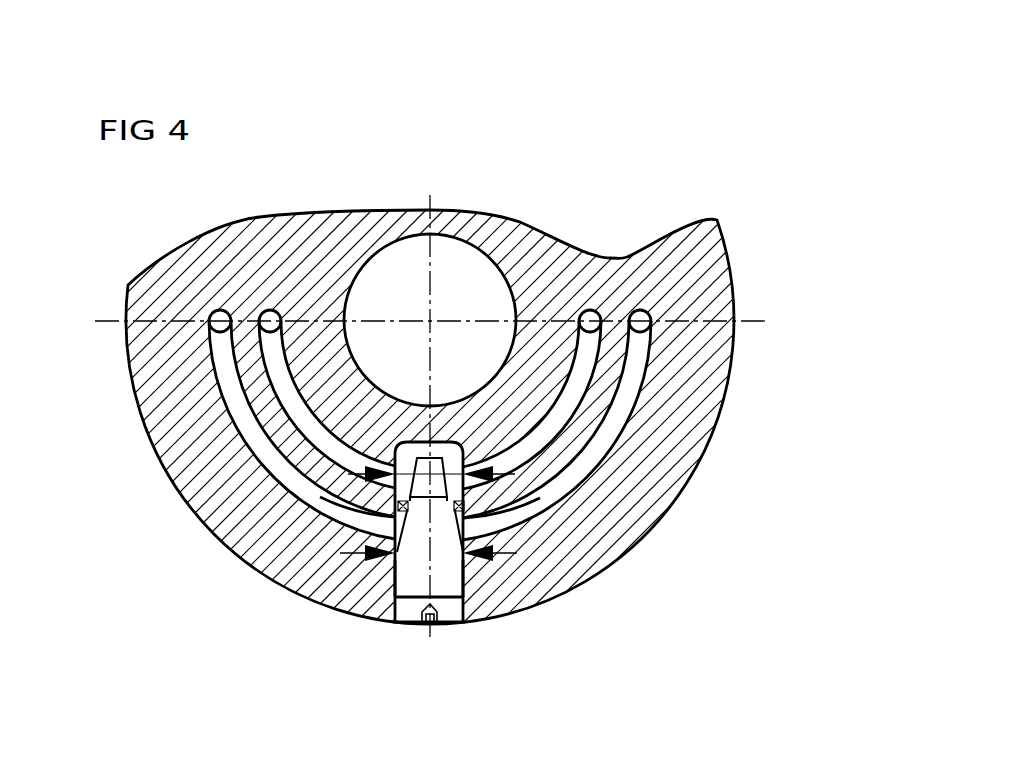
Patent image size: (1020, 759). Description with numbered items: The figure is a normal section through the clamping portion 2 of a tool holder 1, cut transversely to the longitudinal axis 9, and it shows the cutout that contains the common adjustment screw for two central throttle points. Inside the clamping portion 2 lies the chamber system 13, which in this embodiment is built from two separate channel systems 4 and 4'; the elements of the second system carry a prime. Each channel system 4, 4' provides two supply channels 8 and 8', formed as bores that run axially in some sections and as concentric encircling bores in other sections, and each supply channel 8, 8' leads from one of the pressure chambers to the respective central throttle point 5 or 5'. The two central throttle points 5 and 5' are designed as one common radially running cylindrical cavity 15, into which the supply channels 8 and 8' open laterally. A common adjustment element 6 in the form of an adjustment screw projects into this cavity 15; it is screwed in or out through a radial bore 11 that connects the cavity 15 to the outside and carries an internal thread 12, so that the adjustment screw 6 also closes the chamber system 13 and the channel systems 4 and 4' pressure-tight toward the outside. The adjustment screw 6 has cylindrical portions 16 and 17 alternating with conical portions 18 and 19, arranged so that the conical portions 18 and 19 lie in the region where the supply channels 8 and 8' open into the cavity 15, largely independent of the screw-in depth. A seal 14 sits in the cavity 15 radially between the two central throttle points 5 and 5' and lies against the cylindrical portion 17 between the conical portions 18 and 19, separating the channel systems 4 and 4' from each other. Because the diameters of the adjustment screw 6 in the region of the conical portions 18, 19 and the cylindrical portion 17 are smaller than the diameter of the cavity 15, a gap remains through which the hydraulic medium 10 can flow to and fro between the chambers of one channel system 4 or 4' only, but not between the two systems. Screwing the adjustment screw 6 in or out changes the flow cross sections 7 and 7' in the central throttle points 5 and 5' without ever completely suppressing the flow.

The tool holder 1 is at (780, 140).
The clamping portion 2 is at (663, 247).
The channel system 4 is at (448, 321).
The second channel system 4' is at (430, 425).
The central throttle point 5 is at (462, 438).
The central throttle point 5' is at (360, 600).
The adjustment element 6 is at (428, 626).
The flow cross section 7 is at (570, 487).
The flow cross section 7' is at (431, 604).
The supply channel 8 is at (450, 321).
The supply channel 8' is at (430, 425).
The longitudinal axis 9 is at (431, 320).
The hydraulic medium 10 is at (235, 396).
The radial bore 11 is at (394, 655).
The internal thread 12 is at (362, 623).
The chamber system 13 is at (632, 378).
The seal 14 is at (505, 528).
The cavity 15 is at (393, 514).
The cylindrical portion 16 is at (393, 585).
The cylindrical portion 17 is at (450, 497).
The conical portion 18 is at (468, 568).
The conical portion 19 is at (464, 505).